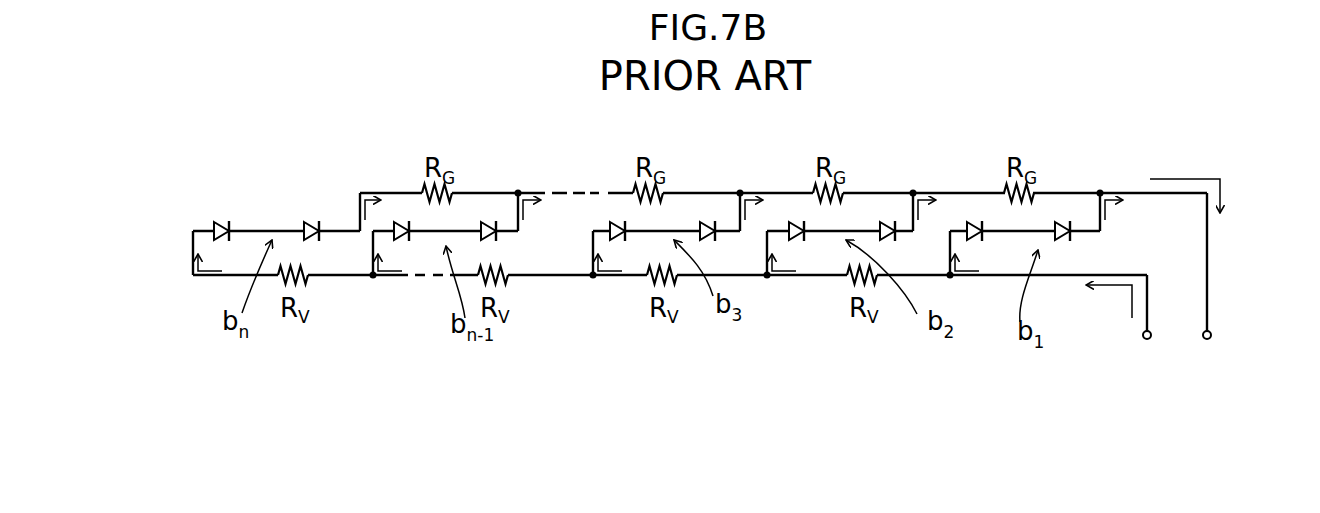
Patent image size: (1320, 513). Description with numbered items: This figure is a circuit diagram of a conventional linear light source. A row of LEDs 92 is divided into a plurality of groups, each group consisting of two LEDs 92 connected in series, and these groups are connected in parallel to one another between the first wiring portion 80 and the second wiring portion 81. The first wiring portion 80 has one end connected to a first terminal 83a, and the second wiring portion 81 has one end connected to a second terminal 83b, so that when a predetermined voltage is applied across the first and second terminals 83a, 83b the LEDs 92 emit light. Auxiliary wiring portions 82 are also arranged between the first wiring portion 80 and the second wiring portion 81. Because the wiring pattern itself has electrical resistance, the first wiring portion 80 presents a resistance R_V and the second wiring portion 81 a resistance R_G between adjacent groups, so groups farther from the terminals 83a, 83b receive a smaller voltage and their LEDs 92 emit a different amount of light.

The first wiring portion 80 is at (783, 277).
The second wiring portion 81 is at (765, 191).
The auxiliary wiring portion 82 is at (840, 230).
The first terminal 83a is at (1143, 338).
The second terminal 83b is at (1212, 336).
The LED 92 is at (305, 228).